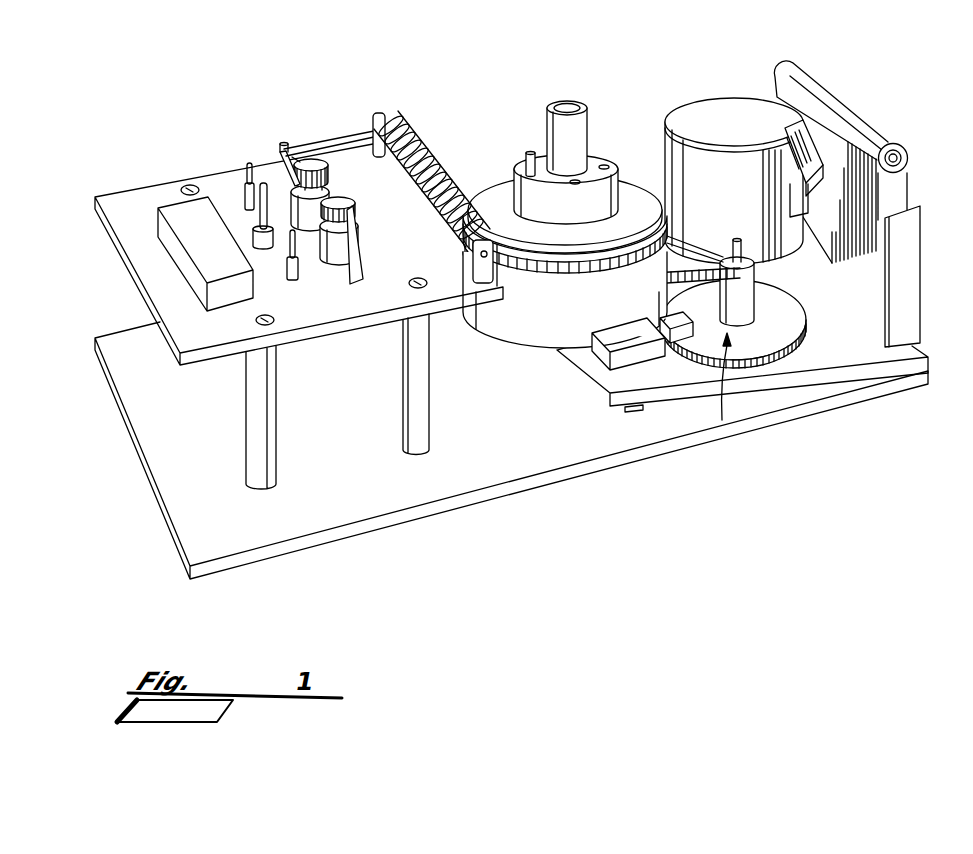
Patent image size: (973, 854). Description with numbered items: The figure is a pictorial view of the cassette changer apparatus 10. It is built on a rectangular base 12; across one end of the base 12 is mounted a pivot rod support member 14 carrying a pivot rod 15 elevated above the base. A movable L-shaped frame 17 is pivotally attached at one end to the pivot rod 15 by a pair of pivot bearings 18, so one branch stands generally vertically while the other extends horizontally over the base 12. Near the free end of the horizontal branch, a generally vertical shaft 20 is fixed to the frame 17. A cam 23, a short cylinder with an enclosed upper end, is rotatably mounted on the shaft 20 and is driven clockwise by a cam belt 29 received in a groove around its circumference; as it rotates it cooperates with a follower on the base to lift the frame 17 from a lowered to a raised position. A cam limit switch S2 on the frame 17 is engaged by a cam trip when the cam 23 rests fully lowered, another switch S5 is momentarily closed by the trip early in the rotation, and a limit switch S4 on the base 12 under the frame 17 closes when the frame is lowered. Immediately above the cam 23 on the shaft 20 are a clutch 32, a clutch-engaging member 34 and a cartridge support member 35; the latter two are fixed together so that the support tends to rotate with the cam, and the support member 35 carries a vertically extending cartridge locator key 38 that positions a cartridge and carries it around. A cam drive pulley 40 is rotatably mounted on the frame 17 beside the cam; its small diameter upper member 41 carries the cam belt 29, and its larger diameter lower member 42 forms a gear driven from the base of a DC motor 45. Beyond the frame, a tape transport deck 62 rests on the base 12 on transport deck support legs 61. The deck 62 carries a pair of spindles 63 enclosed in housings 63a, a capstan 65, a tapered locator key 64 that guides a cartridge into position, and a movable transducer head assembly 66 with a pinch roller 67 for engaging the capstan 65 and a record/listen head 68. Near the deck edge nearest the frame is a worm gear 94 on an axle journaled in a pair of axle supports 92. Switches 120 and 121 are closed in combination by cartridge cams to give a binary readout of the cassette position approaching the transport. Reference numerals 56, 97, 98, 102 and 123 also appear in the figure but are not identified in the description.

The cassette changer apparatus 10 is at (532, 325).
The rectangular base 12 is at (220, 548).
The pivot rod support member 14 is at (912, 248).
The pivot rod 15 is at (853, 127).
The movable L-shaped frame 17 is at (833, 332).
The pivot bearings 18 is at (907, 158).
The vertical shaft 20 is at (590, 127).
The cam 23 is at (527, 331).
The cam belt 29 is at (590, 290).
The clutch 32 is at (613, 262).
The clutch-engaging member 34 is at (495, 188).
The cartridge support member 35 is at (546, 216).
The cartridge locator key 38 is at (527, 152).
The cam drive pulley 40 is at (711, 377).
The small diameter upper member 41 is at (742, 243).
The larger diameter lower member 42 is at (778, 307).
The DC motor 45 is at (716, 190).
The bracket plate 56 is at (805, 147).
The transport deck support legs 61 is at (412, 433).
The tape transport deck 62 is at (133, 202).
The spindles 63 is at (328, 205).
The housings 63a is at (298, 217).
The tapered locator key 64 is at (347, 275).
The capstan 65 is at (280, 177).
The movable transducer head assembly 66 is at (180, 212).
The pinch roller 67 is at (223, 213).
The record/listen head 68 is at (242, 248).
The axle supports 92 is at (377, 113).
The worm gear 94 is at (418, 137).
The pivot pin 97 is at (284, 146).
The pawl 98 is at (293, 158).
The connecting rod 102 is at (360, 131).
The switch 120 is at (791, 158).
The switch 121 is at (803, 153).
The lower block 123 is at (805, 198).
The cam limit switch S2 is at (602, 353).
The limit switch S4 is at (637, 411).
The switch S5 is at (674, 342).